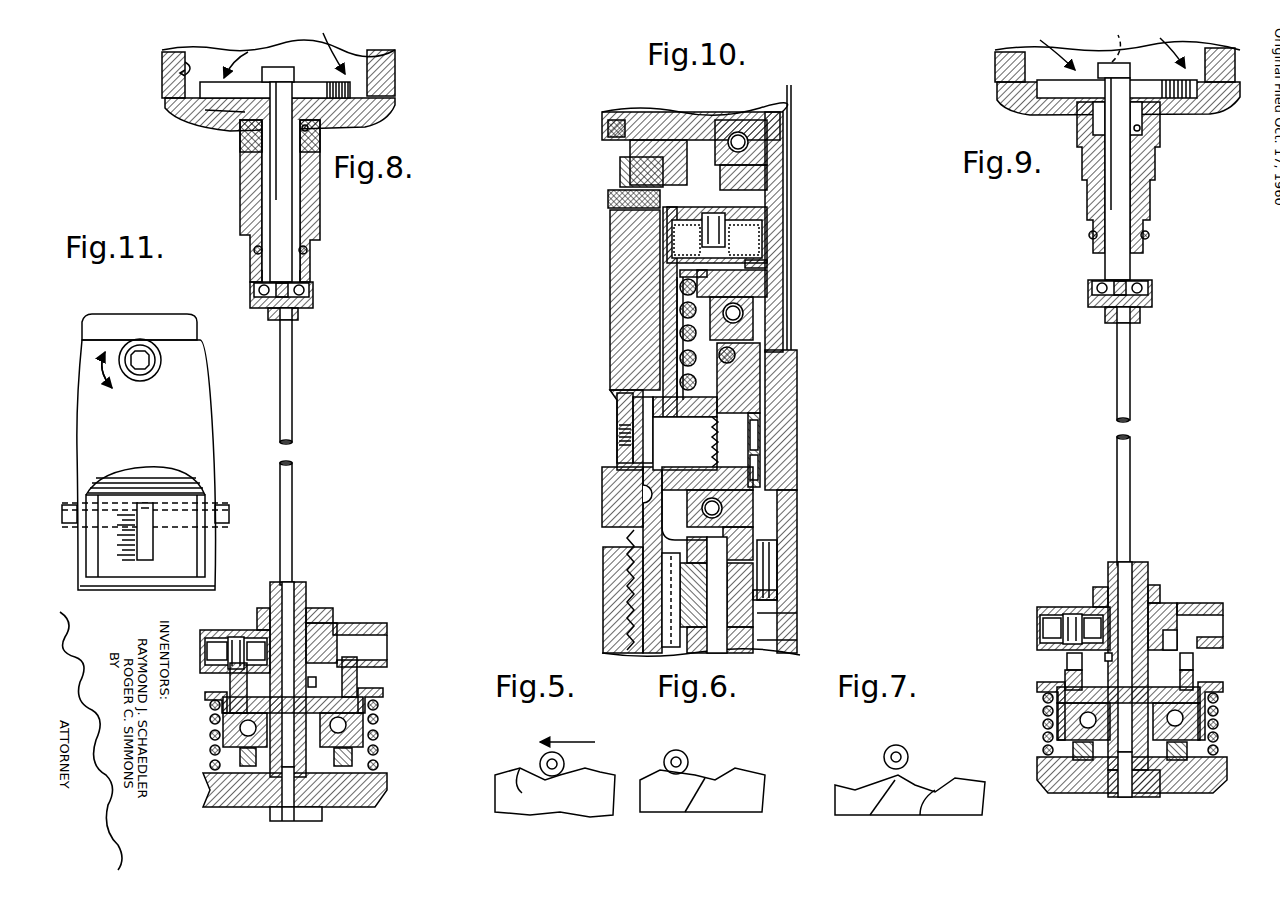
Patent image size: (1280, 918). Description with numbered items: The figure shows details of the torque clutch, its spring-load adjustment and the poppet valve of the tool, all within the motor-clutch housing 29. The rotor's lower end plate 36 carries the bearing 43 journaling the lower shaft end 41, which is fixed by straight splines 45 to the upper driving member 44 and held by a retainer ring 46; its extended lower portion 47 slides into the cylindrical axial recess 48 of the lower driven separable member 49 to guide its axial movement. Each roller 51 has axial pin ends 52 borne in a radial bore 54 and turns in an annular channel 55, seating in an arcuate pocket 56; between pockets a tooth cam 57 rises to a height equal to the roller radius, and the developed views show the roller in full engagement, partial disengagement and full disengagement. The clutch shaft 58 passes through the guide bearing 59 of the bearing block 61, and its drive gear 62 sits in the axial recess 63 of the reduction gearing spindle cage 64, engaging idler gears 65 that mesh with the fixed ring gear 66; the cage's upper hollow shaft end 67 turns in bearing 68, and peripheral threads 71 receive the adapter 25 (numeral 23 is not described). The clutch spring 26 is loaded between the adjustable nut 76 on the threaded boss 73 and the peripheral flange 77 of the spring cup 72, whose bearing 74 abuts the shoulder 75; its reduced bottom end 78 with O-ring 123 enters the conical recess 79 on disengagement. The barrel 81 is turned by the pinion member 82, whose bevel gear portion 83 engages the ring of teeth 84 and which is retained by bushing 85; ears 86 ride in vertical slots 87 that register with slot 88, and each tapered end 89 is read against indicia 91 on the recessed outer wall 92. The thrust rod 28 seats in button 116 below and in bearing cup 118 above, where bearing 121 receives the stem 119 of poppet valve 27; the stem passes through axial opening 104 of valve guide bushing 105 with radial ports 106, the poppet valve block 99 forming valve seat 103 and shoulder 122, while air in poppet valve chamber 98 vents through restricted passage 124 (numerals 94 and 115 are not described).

In FIG. 10, the lower body 23 is at (616, 640).
In FIG. 10, the adapter 25 is at (604, 626).
In FIG. 8, the clutch spring 26 is at (209, 737).
In FIG. 10, the clutch spring 26 is at (680, 310).
In FIG. 9, the clutch spring 26 is at (1219, 744).
In FIG. 8, the poppet valve 27 is at (375, 88).
In FIG. 9, the poppet valve 27 is at (1050, 62).
In FIG. 8, the thrust rod 28 is at (293, 465).
In FIG. 10, the thrust rod 28 is at (792, 225).
In FIG. 9, the thrust rod 28 is at (1131, 446).
In FIG. 11, the motor-clutch housing 29 is at (94, 418).
In FIG. 10, the motor-clutch housing 29 is at (608, 258).
In FIG. 10, the lower end plate 36 is at (732, 118).
In FIG. 10, the lower shaft end 41 is at (770, 140).
In FIG. 10, the bearing 43 is at (752, 178).
In FIG. 8, the upper driving member 44 is at (366, 622).
In FIG. 10, the upper driving member 44 is at (670, 240).
In FIG. 9, the upper driving member 44 is at (1185, 600).
In FIG. 10, the straight splines 45 is at (768, 206).
In FIG. 8, the retainer ring 46 is at (326, 689).
In FIG. 10, the retainer ring 46 is at (762, 262).
In FIG. 9, the retainer ring 46 is at (1107, 664).
In FIG. 8, the extended lower portion 47 is at (298, 590).
In FIG. 10, the extended lower portion 47 is at (766, 340).
In FIG. 9, the extended lower portion 47 is at (1142, 566).
In FIG. 10, the cylindrical axial recess 48 is at (752, 313).
In FIG. 8, the lower driven separable member 49 is at (362, 683).
In FIG. 10, the lower driven separable member 49 is at (755, 286).
In FIG. 5, the lower driven separable member 49 is at (492, 793).
In FIG. 9, the lower driven separable member 49 is at (1200, 670).
In FIG. 8, the roller 51 is at (238, 634).
In FIG. 10, the roller 51 is at (714, 222).
In FIG. 5, the roller 51 is at (566, 766).
In FIG. 6, the roller 51 is at (688, 760).
In FIG. 7, the roller 51 is at (910, 758).
In FIG. 9, the roller 51 is at (1070, 614).
In FIG. 8, the axial pin ends 52 is at (212, 650).
In FIG. 9, the axial pin ends 52 is at (1073, 628).
In FIG. 8, the radial bore 54 is at (389, 642).
In FIG. 9, the radial bore 54 is at (1215, 628).
In FIG. 9, the annular channel 55 is at (1205, 650).
In FIG. 6, the arcuate pocket 56 is at (688, 814).
In FIG. 7, the arcuate pocket 56 is at (932, 815).
In FIG. 8, the tooth cam 57 is at (230, 680).
In FIG. 5, the tooth cam 57 is at (535, 787).
In FIG. 6, the tooth cam 57 is at (736, 772).
In FIG. 7, the tooth cam 57 is at (874, 815).
In FIG. 9, the tooth cam 57 is at (1068, 662).
In FIG. 8, the clutch shaft 58 is at (310, 820).
In FIG. 10, the clutch shaft 58 is at (760, 446).
In FIG. 9, the clutch shaft 58 is at (1120, 798).
In FIG. 10, the guide bearing 59 is at (758, 470).
In FIG. 10, the bearing block 61 is at (625, 495).
In FIG. 10, the drive gear 62 is at (772, 560).
In FIG. 10, the axial recess 63 is at (770, 630).
In FIG. 10, the reduction gearing spindle cage 64 is at (770, 648).
In FIG. 10, the idler gears 65 is at (766, 606).
In FIG. 10, the fixed ring gear 66 is at (668, 600).
In FIG. 10, the upper hollow shaft end 67 is at (748, 506).
In FIG. 10, the bearing 68 is at (662, 516).
In FIG. 10, the peripheral threads 71 is at (620, 576).
In FIG. 8, the spring cup 72 is at (214, 700).
In FIG. 10, the spring cup 72 is at (665, 358).
In FIG. 9, the spring cup 72 is at (1045, 702).
In FIG. 10, the threaded boss 73 is at (758, 432).
In FIG. 8, the bearing 74 is at (352, 732).
In FIG. 10, the bearing 74 is at (745, 332).
In FIG. 9, the bearing 74 is at (1210, 718).
In FIG. 10, the shoulder 75 is at (698, 362).
In FIG. 11, the adjustable nut 76 is at (68, 526).
In FIG. 10, the adjustable nut 76 is at (685, 443).
In FIG. 9, the adjustable nut 76 is at (1208, 785).
In FIG. 10, the peripheral flange 77 is at (692, 273).
In FIG. 10, the reduced bottom end 78 is at (780, 362).
In FIG. 9, the reduced bottom end 78 is at (1172, 785).
In FIG. 8, the conical recess 79 is at (240, 807).
In FIG. 10, the conical recess 79 is at (742, 398).
In FIG. 9, the conical recess 79 is at (1092, 793).
In FIG. 10, the barrel 81 is at (680, 346).
In FIG. 11, the pinion member 82 is at (152, 366).
In FIG. 10, the pinion member 82 is at (622, 176).
In FIG. 10, the bevel gear portion 83 is at (650, 150).
In FIG. 10, the ring of teeth 84 is at (612, 201).
In FIG. 10, the bushing 85 is at (618, 165).
In FIG. 10, the ears 86 is at (660, 406).
In FIG. 10, the vertical slot 87 is at (640, 452).
In FIG. 10, the slot 88 is at (624, 456).
In FIG. 11, the tapered end 89 is at (150, 512).
In FIG. 10, the tapered end 89 is at (624, 436).
In FIG. 11, the indicia 91 is at (132, 562).
In FIG. 11, the recessed outer wall 92 is at (196, 572).
In FIG. 10, the recessed outer wall 92 is at (628, 396).
In FIG. 8, the housing 94 is at (163, 62).
In FIG. 9, the housing 94 is at (996, 64).
In FIG. 8, the poppet valve chamber 98 is at (185, 76).
In FIG. 8, the poppet valve block 99 is at (167, 102).
In FIG. 9, the poppet valve block 99 is at (1006, 98).
In FIG. 8, the valve seat 103 is at (207, 114).
In FIG. 8, the axial opening 104 is at (318, 128).
In FIG. 9, the axial opening 104 is at (1142, 130).
In FIG. 8, the valve guide bushing 105 is at (246, 203).
In FIG. 9, the valve guide bushing 105 is at (1148, 210).
In FIG. 8, the radial ports 106 is at (240, 152).
In FIG. 9, the radial ports 106 is at (1080, 135).
In FIG. 11, the fitting 115 is at (175, 318).
In FIG. 10, the fitting 115 is at (607, 128).
In FIG. 8, the button 116 is at (288, 800).
In FIG. 10, the button 116 is at (790, 380).
In FIG. 9, the button 116 is at (1140, 798).
In FIG. 8, the bearing cup 118 is at (314, 303).
In FIG. 9, the bearing cup 118 is at (1153, 300).
In FIG. 8, the stem 119 is at (286, 238).
In FIG. 9, the stem 119 is at (1115, 198).
In FIG. 8, the bearing 121 is at (312, 290).
In FIG. 9, the bearing 121 is at (1150, 286).
In FIG. 8, the shoulder 122 is at (352, 104).
In FIG. 9, the shoulder 122 is at (1197, 80).
In FIG. 8, the O-ring 123 is at (354, 760).
In FIG. 10, the O-ring 123 is at (683, 458).
In FIG. 9, the O-ring 123 is at (1075, 765).
In FIG. 9, the restricted passage 124 is at (1119, 37).